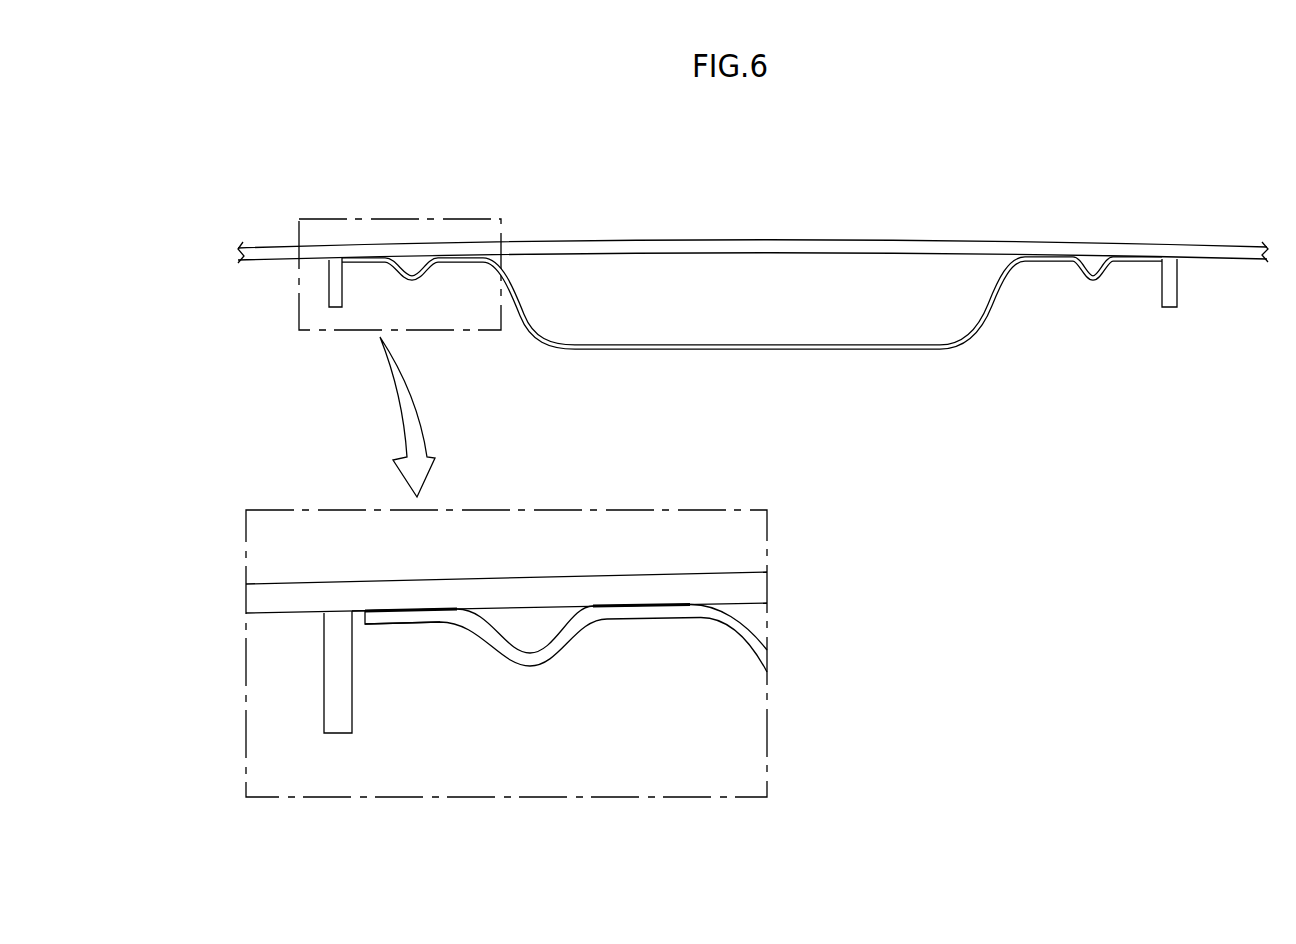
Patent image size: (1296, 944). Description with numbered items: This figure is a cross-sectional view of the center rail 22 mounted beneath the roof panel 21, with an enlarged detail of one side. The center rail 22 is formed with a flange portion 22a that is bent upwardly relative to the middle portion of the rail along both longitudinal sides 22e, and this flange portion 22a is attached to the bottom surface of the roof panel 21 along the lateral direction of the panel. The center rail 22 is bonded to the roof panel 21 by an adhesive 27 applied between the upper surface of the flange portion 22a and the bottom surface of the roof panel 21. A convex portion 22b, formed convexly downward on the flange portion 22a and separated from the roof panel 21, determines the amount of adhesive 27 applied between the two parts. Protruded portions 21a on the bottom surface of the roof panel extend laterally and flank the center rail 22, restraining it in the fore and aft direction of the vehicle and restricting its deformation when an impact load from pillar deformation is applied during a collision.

The roof panel 21 is at (697, 242).
The protruded portions 21a is at (328, 281).
The center rail 22 is at (817, 352).
The flange portion 22a is at (437, 585).
The convex portion 22b is at (535, 658).
The longitudinal sides 22e is at (378, 288).
The adhesive 27 is at (437, 585).